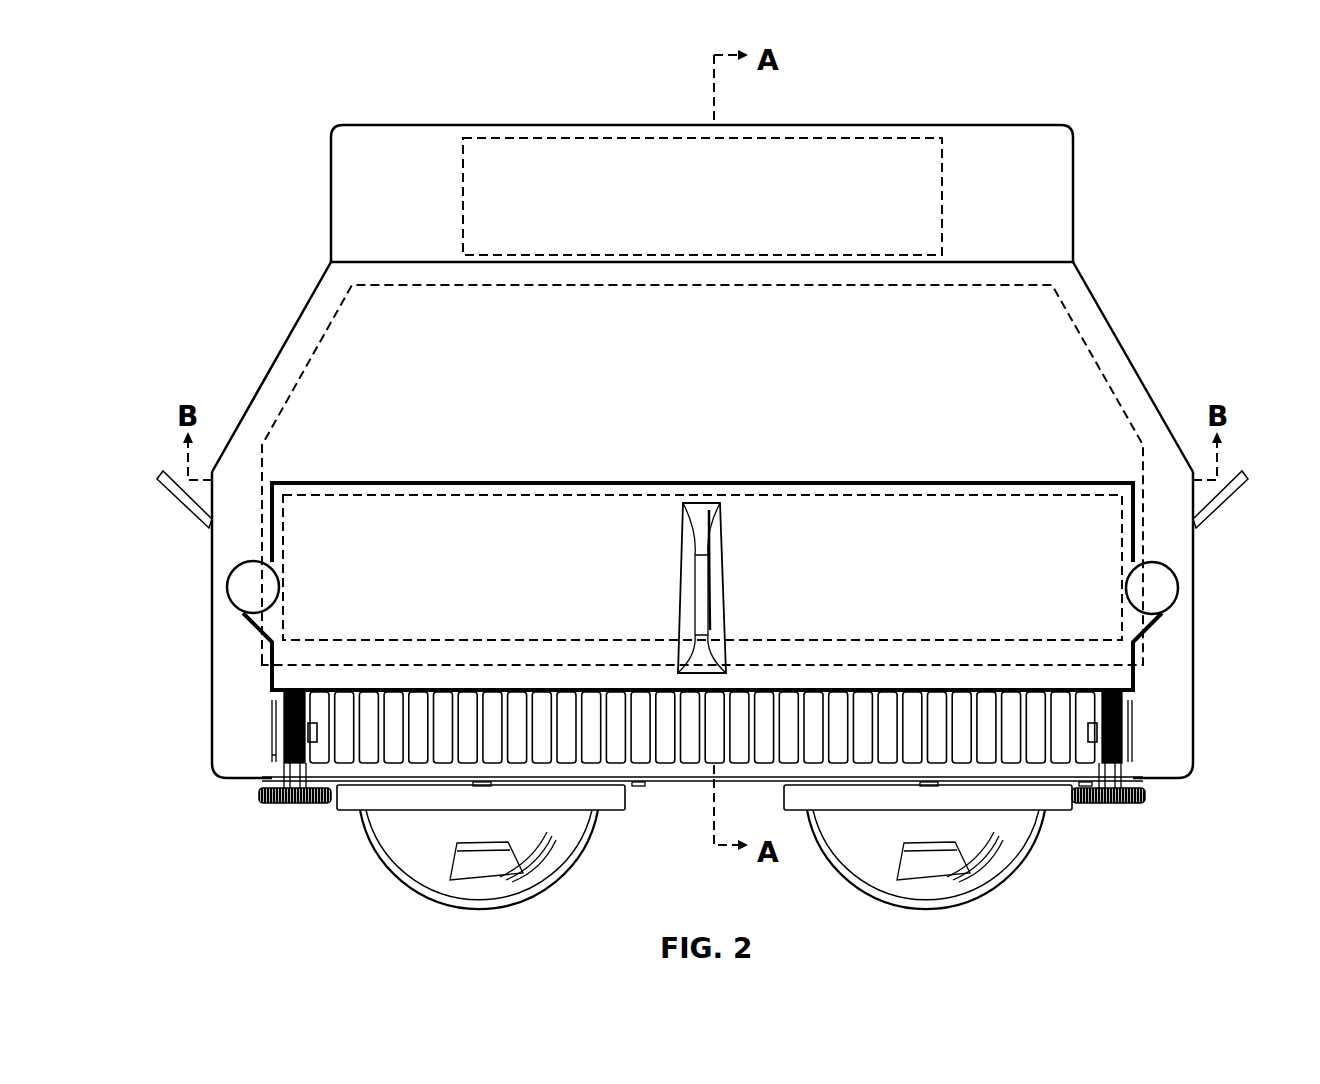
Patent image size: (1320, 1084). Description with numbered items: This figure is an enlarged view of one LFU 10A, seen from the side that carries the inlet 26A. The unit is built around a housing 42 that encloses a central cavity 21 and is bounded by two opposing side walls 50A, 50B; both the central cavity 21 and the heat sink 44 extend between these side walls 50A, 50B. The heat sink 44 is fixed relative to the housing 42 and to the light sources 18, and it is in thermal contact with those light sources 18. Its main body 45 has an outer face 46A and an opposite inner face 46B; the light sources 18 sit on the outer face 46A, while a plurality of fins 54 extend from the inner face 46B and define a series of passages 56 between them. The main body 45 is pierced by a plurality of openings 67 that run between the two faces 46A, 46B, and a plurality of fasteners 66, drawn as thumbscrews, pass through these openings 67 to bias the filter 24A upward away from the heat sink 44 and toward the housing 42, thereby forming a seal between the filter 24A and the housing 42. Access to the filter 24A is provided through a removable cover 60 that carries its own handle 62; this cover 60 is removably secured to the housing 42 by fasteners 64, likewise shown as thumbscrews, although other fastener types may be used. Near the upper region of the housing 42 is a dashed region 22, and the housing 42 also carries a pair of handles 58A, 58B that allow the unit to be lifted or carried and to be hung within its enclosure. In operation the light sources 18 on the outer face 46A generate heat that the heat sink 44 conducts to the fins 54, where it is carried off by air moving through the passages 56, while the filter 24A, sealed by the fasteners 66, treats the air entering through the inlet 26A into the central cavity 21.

The cleaning device 10A is at (706, 423).
The light source 18 is at (714, 848).
The central cavity 21 is at (308, 352).
The battery 22 is at (625, 155).
The filter 24A is at (405, 495).
The inlet 26A is at (266, 783).
The housing 42 is at (953, 170).
The heat sink 44 is at (650, 802).
The main body 45 is at (318, 802).
The outer face 46A is at (688, 792).
The inner face 46B is at (745, 738).
The side wall 50A is at (220, 745).
The side wall 50B is at (1185, 745).
The fins 54 is at (434, 714).
The passages 56 is at (568, 712).
The handle 58A is at (180, 506).
The handle 58B is at (1225, 506).
The removable cover 60 is at (569, 573).
The handle 62 is at (723, 555).
The fasteners 64 is at (245, 597).
The fasteners 66 is at (268, 805).
The openings 67 is at (287, 768).